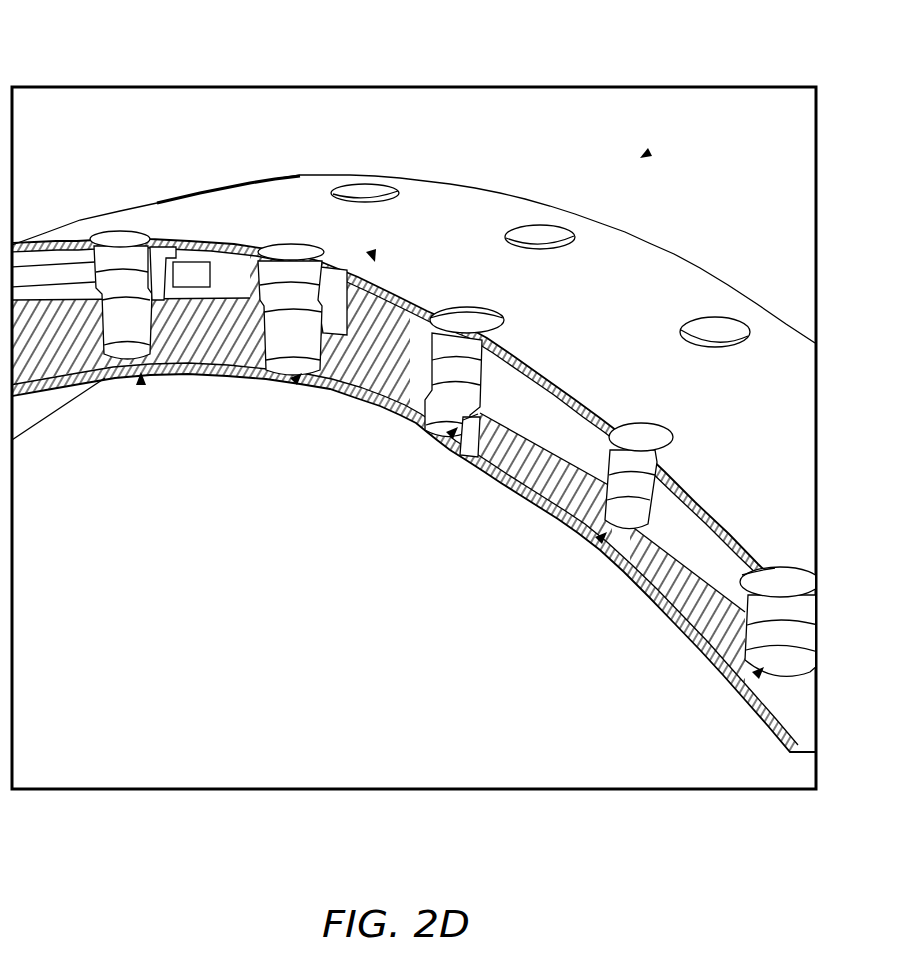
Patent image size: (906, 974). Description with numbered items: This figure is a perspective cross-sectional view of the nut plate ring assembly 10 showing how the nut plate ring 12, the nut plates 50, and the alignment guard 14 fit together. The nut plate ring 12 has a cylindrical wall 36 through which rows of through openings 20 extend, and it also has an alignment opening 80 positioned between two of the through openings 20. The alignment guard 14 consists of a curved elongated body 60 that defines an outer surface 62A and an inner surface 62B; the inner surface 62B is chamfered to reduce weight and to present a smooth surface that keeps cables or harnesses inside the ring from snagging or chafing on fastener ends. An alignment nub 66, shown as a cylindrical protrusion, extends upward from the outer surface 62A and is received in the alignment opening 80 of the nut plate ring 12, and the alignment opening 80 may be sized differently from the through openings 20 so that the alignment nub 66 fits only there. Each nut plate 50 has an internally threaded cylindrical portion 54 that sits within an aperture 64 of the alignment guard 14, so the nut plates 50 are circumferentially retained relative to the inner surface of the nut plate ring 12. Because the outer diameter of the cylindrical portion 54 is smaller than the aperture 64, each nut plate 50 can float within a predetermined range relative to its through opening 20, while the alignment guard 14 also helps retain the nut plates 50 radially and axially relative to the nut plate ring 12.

The nut plate ring assembly 10 is at (650, 152).
The nut plate ring 12 is at (647, 243).
The alignment guard 14 is at (195, 380).
The through openings 20 is at (110, 233).
The cylindrical wall 36 is at (714, 522).
The nut plate 50 is at (153, 268).
The cylindrical portion 54 is at (468, 425).
The curved elongated body 60 is at (505, 485).
The outer surface 62A is at (742, 575).
The inner surface 62B is at (640, 590).
The apertures 64 is at (141, 384).
The alignment nub 66 is at (398, 280).
The alignment opening 80 is at (371, 250).